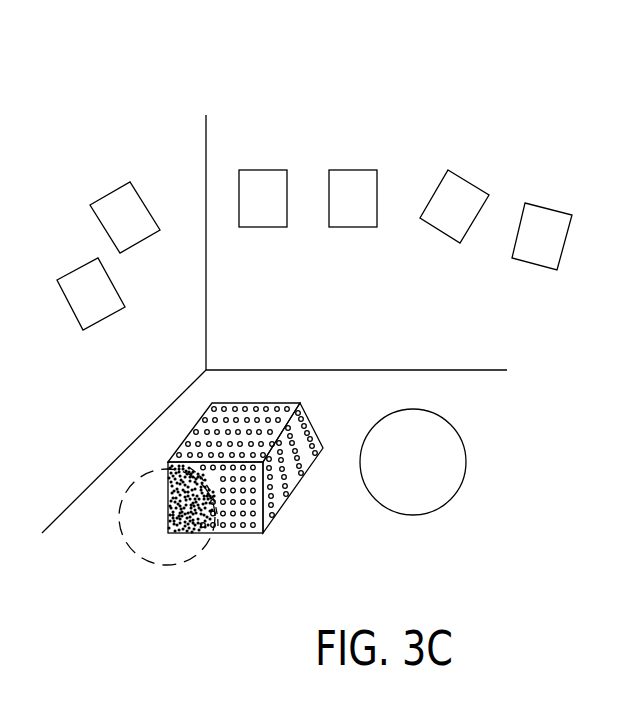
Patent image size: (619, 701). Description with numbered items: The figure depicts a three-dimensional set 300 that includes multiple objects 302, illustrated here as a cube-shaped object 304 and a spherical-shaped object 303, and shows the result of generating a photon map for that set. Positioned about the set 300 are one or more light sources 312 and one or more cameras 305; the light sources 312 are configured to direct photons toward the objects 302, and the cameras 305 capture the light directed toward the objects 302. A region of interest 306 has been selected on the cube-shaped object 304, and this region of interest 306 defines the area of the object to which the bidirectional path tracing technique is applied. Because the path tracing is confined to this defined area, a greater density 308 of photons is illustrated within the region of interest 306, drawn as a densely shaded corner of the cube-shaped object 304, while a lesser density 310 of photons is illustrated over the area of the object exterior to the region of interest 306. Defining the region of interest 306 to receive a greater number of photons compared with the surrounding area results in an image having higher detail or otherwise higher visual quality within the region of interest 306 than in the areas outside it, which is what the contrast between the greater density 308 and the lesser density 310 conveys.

The set 300 is at (188, 106).
The objects 302 is at (487, 483).
The spherical-shaped object 303 is at (460, 455).
The cube-shaped object 304 is at (237, 452).
The cameras 305 is at (72, 272).
The region of interest 306 is at (141, 478).
The greater density of photons 308 is at (160, 500).
The lesser density of photons 310 is at (300, 497).
The light sources 312 is at (106, 188).